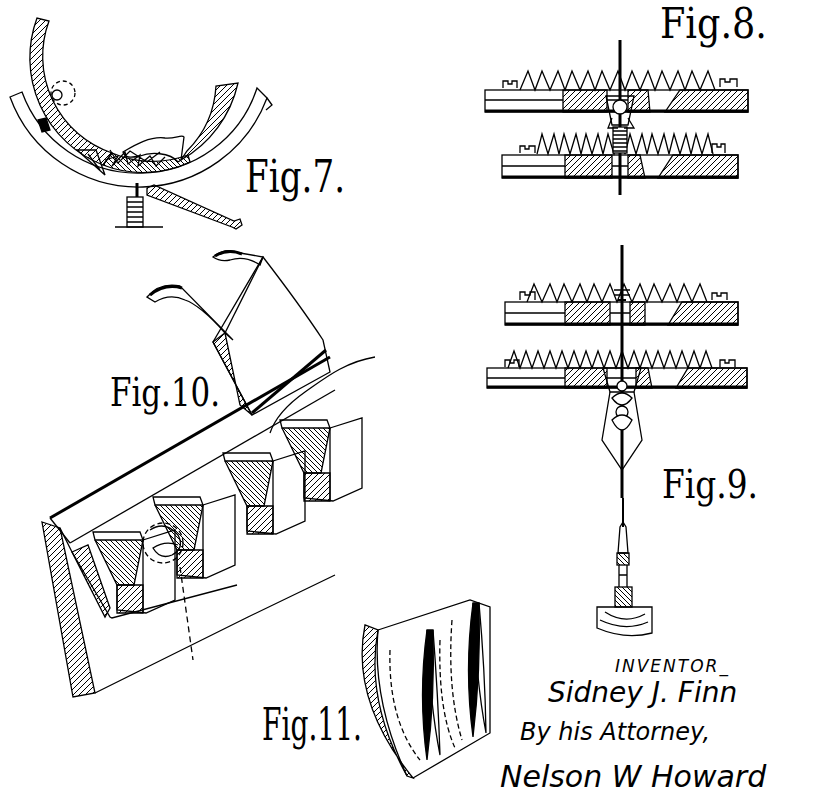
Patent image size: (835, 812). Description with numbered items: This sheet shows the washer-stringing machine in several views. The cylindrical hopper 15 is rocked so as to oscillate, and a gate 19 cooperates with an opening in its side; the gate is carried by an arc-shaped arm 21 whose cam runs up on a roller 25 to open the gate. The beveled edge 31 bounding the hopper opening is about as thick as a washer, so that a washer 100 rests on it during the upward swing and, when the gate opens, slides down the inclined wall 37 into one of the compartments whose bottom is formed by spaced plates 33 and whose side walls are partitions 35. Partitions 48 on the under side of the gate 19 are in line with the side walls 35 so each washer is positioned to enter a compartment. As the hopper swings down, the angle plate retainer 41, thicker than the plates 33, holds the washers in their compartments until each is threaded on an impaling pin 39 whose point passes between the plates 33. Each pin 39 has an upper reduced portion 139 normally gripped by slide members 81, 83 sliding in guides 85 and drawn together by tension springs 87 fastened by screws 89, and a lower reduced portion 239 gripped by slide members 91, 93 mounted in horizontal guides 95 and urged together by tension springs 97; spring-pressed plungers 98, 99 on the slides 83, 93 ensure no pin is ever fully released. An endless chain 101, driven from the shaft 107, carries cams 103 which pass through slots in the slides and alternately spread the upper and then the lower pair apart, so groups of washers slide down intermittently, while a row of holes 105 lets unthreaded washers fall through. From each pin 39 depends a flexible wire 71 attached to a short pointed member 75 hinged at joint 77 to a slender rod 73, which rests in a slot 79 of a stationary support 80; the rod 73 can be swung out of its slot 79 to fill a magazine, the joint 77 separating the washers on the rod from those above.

In FIG. 7, the cylindrical hopper 15 is at (43, 40).
In FIG. 10, the cylindrical hopper 15 is at (128, 665).
In FIG. 7, the gate 19 is at (205, 145).
In FIG. 10, the gate 19 is at (297, 310).
In FIG. 11, the gate 19 is at (372, 625).
In FIG. 7, the arc-shaped arm 21 is at (46, 148).
In FIG. 7, the roller 25 is at (62, 93).
In FIG. 7, the edge of hopper opening 31 is at (108, 168).
In FIG. 10, the edge of hopper opening 31 is at (48, 516).
In FIG. 10, the spaced plates 33 is at (355, 447).
In FIG. 10, the side walls or partitions 35 is at (220, 457).
In FIG. 10, the inclined wall 37 is at (331, 388).
In FIG. 7, the impaling pin 39 is at (135, 200).
In FIG. 8, the impaling pin 39 is at (620, 63).
In FIG. 9, the impaling pin 39 is at (624, 264).
In FIG. 7, the angle plate retainer 41 is at (207, 213).
In FIG. 7, the partitions on under side of gate 48 is at (167, 145).
In FIG. 10, the partitions on under side of gate 48 is at (218, 262).
In FIG. 11, the partitions on under side of gate 48 is at (468, 623).
In FIG. 9, the wire 71 is at (626, 485).
In FIG. 9, the slender rod 73 is at (616, 576).
In FIG. 9, the short pointed member 75 is at (630, 538).
In FIG. 9, the hinge or joint 77 is at (632, 563).
In FIG. 9, the slot 79 is at (650, 630).
In FIG. 9, the stationary support 80 is at (610, 612).
In FIG. 8, the slide member or gripper 81 is at (748, 94).
In FIG. 9, the slide member or gripper 81 is at (738, 305).
In FIG. 8, the slide member or gripper 83 is at (492, 100).
In FIG. 9, the slide member or gripper 83 is at (510, 315).
In FIG. 8, the guides 85 is at (497, 88).
In FIG. 9, the guides 85 is at (515, 300).
In FIG. 8, the tension springs 87 is at (575, 72).
In FIG. 9, the tension springs 87 is at (580, 285).
In FIG. 8, the screws 89 is at (512, 79).
In FIG. 9, the screws 89 is at (526, 292).
In FIG. 8, the slide member or gripper 91 is at (738, 166).
In FIG. 9, the slide member or gripper 91 is at (747, 370).
In FIG. 8, the slide member or gripper 93 is at (503, 167).
In FIG. 9, the slide member or gripper 93 is at (490, 378).
In FIG. 8, the horizontal guides 95 is at (507, 157).
In FIG. 9, the horizontal guides 95 is at (497, 368).
In FIG. 8, the tension springs 97 is at (578, 142).
In FIG. 9, the tension springs 97 is at (540, 355).
In FIG. 8, the spring-pressed plunger 98 is at (588, 72).
In FIG. 9, the spring-pressed plunger 98 is at (590, 285).
In FIG. 8, the spring-pressed plunger 99 is at (580, 177).
In FIG. 9, the spring-pressed plunger 99 is at (590, 385).
In FIG. 10, the washer 100 is at (179, 602).
In FIG. 9, the endless chain 101 is at (620, 430).
In FIG. 8, the cam 103 is at (640, 118).
In FIG. 9, the cam 103 is at (640, 400).
In FIG. 8, the row of holes 105 is at (713, 113).
In FIG. 8, the shaft 107 is at (655, 170).
In FIG. 9, the upper portion of reduced diameter 139 is at (650, 284).
In FIG. 9, the lower portion of reduced diameter 239 is at (610, 392).